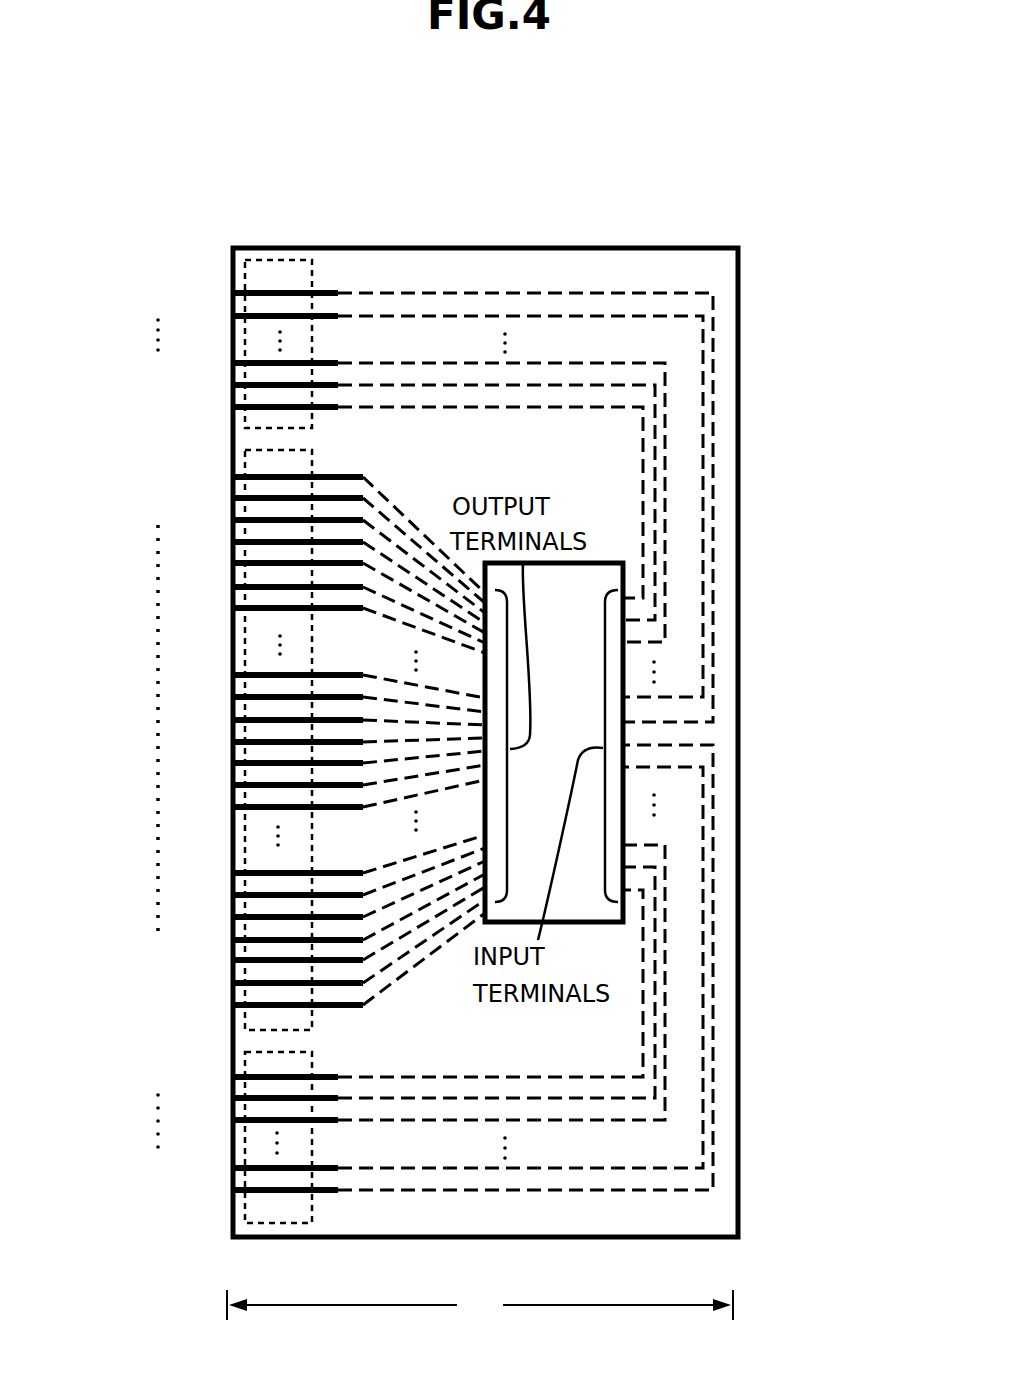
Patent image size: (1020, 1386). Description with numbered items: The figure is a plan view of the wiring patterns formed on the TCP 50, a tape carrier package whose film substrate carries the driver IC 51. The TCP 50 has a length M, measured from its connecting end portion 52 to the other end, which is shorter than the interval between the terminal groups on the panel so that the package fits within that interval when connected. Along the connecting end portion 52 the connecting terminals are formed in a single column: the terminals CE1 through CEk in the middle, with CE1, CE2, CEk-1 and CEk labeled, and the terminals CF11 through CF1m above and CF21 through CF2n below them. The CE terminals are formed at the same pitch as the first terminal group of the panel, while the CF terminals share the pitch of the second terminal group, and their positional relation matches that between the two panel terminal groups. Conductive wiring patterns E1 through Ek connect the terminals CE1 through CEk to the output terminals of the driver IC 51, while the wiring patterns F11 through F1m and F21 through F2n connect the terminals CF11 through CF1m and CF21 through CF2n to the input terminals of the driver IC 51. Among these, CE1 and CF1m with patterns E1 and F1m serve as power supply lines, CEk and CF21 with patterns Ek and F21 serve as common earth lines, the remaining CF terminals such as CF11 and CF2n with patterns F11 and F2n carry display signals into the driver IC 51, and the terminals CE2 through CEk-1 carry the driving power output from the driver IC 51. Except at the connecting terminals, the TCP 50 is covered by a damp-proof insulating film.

The TCP 50 is at (514, 248).
The driver IC 51 is at (607, 563).
The connecting end portion 52 is at (327, 240).
The connecting terminal CF11 is at (275, 293).
The connecting terminal CF1m is at (275, 407).
The connecting terminal CF21 is at (272, 1077).
The connecting terminal CF2n is at (265, 1190).
The connecting terminal CE1 is at (275, 477).
The connecting terminal CE2 is at (270, 498).
The connecting terminal CEk-1 is at (272, 983).
The connecting terminal CEk is at (265, 1005).
The conductive wiring pattern E1 is at (413, 508).
The conductive wiring pattern Ek is at (408, 961).
The conductive wiring pattern F11 is at (630, 293).
The conductive wiring pattern F1m is at (512, 409).
The conductive wiring pattern F21 is at (510, 1077).
The conductive wiring pattern F2n is at (626, 1193).
The length of the TCP M is at (480, 1305).